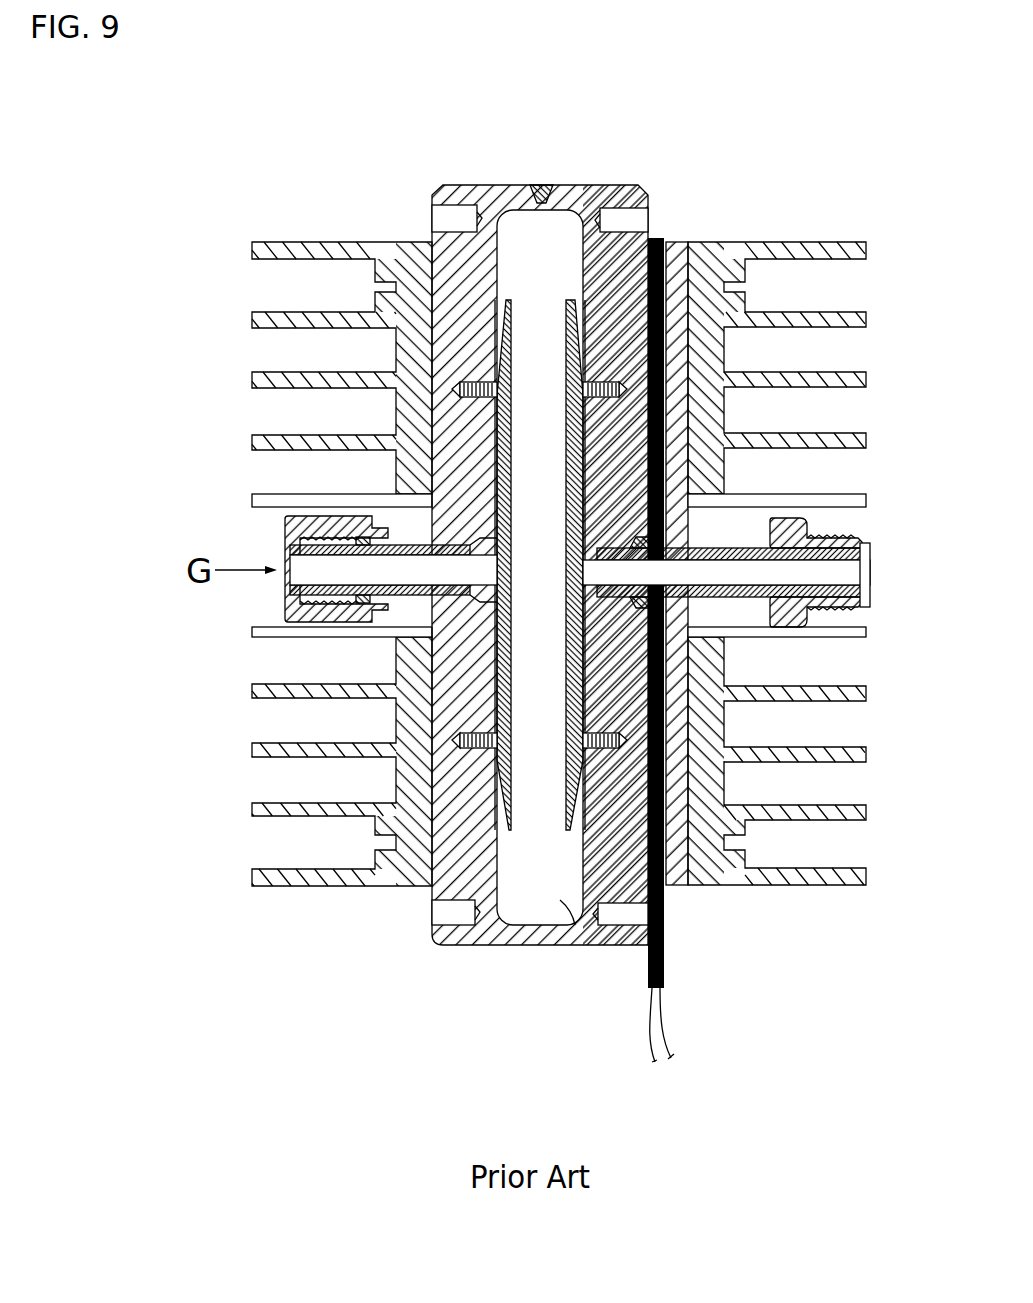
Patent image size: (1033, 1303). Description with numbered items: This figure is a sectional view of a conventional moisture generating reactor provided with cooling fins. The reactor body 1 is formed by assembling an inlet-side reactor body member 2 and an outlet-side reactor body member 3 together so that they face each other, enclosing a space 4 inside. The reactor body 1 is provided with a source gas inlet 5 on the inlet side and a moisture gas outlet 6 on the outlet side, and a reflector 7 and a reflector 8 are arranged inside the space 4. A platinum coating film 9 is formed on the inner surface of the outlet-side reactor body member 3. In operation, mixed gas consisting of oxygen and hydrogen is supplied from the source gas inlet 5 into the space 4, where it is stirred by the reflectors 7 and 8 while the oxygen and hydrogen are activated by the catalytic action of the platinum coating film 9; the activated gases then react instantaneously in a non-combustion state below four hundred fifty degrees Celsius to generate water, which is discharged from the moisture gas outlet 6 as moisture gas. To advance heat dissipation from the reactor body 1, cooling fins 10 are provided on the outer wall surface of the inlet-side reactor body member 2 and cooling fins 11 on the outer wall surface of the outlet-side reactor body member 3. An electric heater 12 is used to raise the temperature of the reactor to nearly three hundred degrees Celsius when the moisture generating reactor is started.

The reactor body 1 is at (566, 534).
The inlet-side reactor body member 2 is at (468, 262).
The outlet-side reactor body member 3 is at (612, 285).
The space 4 is at (537, 258).
The source gas inlet 5 is at (432, 568).
The moisture gas outlet 6 is at (643, 573).
The reflector 7 is at (505, 493).
The reflector 8 is at (567, 483).
The platinum coating film 9 is at (575, 888).
The cooling fins 10 is at (249, 757).
The cooling fins 11 is at (869, 765).
The electric heater 12 is at (664, 913).